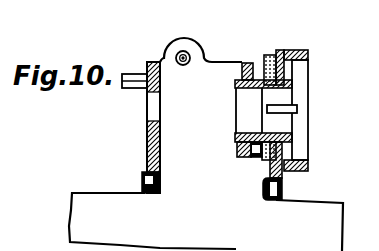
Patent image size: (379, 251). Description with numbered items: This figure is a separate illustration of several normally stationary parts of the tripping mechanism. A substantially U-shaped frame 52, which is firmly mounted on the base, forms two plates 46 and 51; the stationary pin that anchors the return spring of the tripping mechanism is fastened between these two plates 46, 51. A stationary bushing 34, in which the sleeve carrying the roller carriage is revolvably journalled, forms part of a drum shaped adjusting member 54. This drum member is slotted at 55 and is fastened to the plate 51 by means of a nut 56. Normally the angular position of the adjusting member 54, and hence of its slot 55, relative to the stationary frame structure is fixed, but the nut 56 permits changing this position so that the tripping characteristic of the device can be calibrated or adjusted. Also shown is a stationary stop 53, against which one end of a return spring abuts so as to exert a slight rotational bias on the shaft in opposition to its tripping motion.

The stationary bushing 34 is at (236, 95).
The plate 46 is at (145, 150).
The plate 51 is at (280, 52).
The U-shaped frame 52 is at (217, 69).
The stationary stop 53 is at (128, 74).
The drum shaped adjusting member 54 is at (308, 66).
The slot 55 is at (298, 110).
The nut 56 is at (247, 67).